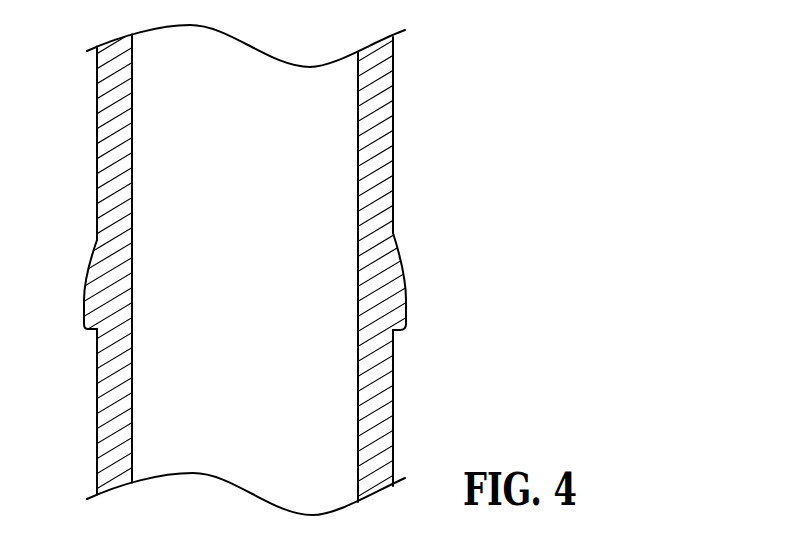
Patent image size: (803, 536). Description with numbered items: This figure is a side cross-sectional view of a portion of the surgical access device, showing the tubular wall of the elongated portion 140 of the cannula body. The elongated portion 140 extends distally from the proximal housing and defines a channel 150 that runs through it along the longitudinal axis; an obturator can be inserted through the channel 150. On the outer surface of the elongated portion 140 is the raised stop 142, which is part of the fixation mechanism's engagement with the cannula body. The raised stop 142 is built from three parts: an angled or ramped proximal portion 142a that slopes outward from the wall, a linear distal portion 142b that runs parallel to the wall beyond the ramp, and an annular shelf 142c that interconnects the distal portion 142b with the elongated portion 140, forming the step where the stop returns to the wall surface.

The elongated portion 140 is at (382, 168).
The channel 150 is at (263, 231).
The raised stop 142 is at (333, 311).
The ramped proximal portion 142a is at (399, 270).
The linear distal portion 142b is at (408, 308).
The annular shelf 142c is at (398, 334).